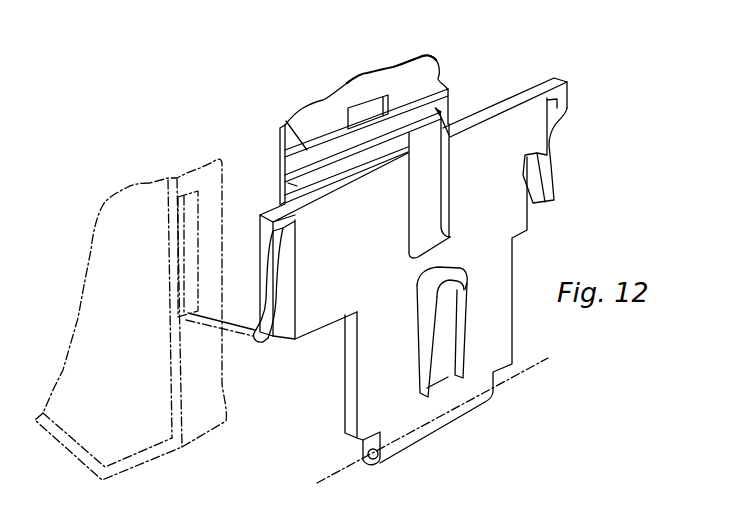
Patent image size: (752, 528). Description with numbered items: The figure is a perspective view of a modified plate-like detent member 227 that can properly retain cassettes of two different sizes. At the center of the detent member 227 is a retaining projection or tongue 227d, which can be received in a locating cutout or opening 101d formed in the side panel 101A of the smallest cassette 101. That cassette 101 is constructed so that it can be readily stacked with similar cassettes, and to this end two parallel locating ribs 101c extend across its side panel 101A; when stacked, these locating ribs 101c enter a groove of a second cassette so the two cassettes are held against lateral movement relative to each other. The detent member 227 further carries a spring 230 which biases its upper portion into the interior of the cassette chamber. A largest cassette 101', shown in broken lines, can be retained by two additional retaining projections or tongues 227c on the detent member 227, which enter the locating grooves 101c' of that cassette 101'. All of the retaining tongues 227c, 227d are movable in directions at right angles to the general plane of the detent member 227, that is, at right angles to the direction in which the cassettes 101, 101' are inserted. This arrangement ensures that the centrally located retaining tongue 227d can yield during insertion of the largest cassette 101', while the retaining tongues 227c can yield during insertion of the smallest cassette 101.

The cassette 101 is at (364, 127).
The largest cassette 101' is at (130, 309).
The locating ribs 101c is at (272, 138).
The locating grooves 101c' is at (177, 263).
The locating cutout 101d is at (373, 104).
The side panel 101A is at (424, 64).
The detent member 227 is at (538, 75).
The retaining tongues 227c is at (553, 170).
The retaining tongue 227d is at (436, 114).
The spring 230 is at (447, 316).